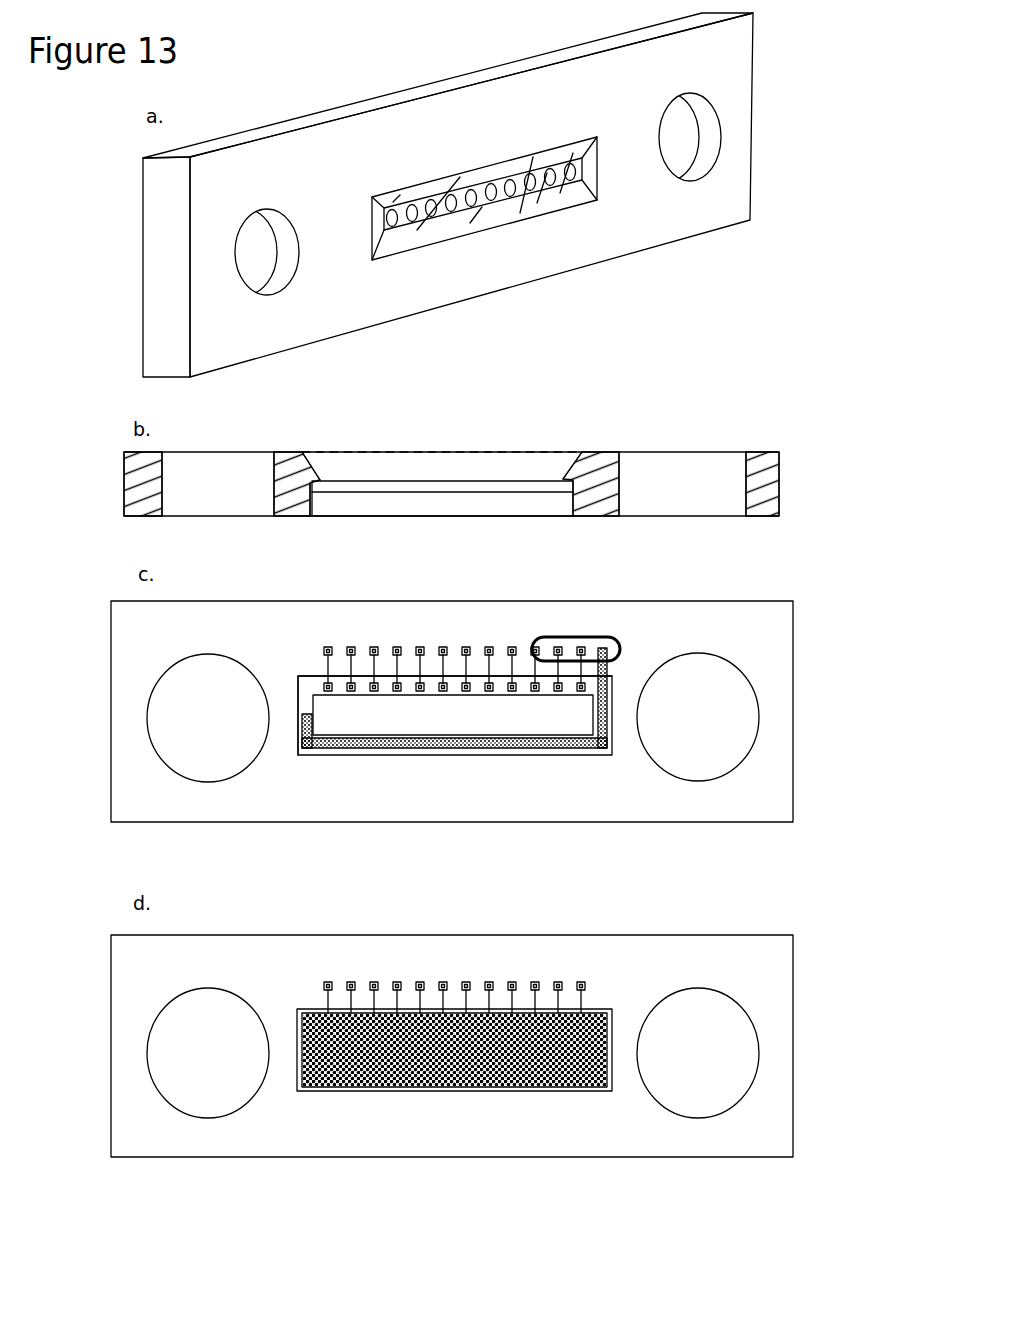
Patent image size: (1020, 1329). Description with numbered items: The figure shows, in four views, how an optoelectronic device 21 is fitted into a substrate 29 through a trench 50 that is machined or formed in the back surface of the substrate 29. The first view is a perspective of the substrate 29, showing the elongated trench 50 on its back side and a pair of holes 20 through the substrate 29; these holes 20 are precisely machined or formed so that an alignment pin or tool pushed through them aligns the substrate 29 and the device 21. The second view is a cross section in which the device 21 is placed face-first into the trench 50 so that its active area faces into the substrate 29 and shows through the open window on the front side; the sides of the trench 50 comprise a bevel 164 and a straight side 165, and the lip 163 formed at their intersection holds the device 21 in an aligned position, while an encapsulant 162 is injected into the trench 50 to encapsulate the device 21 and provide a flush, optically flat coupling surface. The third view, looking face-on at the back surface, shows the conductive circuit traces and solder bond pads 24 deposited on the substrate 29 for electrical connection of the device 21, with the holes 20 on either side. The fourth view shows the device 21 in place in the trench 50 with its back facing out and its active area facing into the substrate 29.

The substrate 29 is at (751, 81).
The holes 20 is at (715, 143).
The trench 50 is at (563, 193).
The encapsulant 162 is at (420, 463).
The bevel 164 is at (318, 476).
The lip 163 is at (308, 478).
The straight side 165 is at (313, 500).
The optoelectronic device 21 is at (465, 488).
The conductive circuit traces and solder bond pads 24 is at (583, 635).